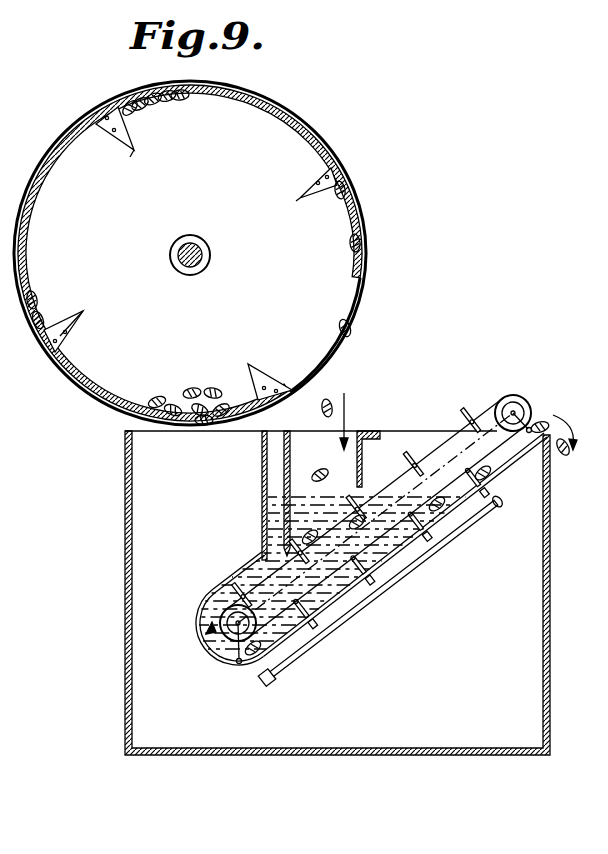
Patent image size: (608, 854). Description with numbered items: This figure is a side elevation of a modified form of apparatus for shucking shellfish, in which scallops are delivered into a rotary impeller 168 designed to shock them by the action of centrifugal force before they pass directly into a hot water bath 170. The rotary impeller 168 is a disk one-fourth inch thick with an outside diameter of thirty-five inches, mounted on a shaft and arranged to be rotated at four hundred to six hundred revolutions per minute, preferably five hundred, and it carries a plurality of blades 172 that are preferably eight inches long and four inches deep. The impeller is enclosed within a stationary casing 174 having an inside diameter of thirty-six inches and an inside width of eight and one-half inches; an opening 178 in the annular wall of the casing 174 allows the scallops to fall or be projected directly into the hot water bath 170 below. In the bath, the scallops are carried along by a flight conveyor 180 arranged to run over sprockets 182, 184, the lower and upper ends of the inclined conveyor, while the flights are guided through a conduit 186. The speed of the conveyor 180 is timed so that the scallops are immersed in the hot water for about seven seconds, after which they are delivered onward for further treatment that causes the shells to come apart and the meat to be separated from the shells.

The rotary impeller 168 is at (292, 165).
The hot water bath 170 is at (396, 490).
The blades 172 is at (129, 139).
The stationary casing 174 is at (365, 225).
The opening 178 is at (323, 363).
The flight conveyor 180 is at (443, 438).
The sprocket 182 is at (212, 648).
The sprocket 184 is at (522, 398).
The conduit 186 is at (238, 572).